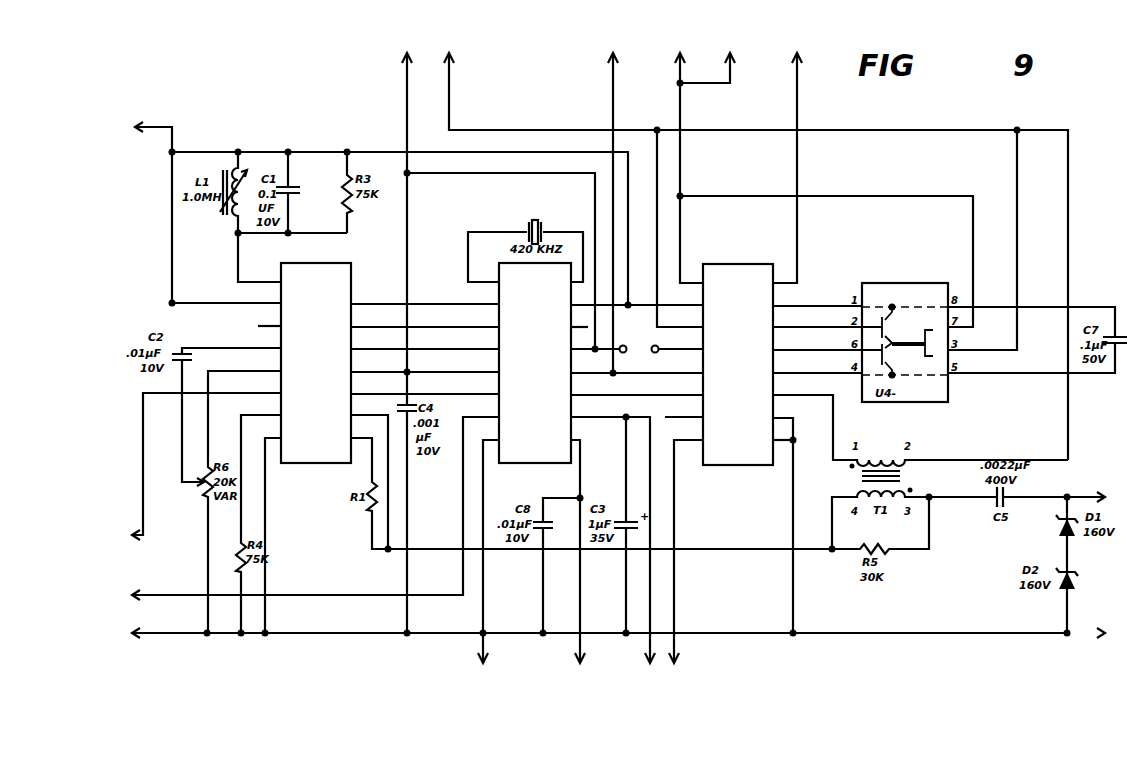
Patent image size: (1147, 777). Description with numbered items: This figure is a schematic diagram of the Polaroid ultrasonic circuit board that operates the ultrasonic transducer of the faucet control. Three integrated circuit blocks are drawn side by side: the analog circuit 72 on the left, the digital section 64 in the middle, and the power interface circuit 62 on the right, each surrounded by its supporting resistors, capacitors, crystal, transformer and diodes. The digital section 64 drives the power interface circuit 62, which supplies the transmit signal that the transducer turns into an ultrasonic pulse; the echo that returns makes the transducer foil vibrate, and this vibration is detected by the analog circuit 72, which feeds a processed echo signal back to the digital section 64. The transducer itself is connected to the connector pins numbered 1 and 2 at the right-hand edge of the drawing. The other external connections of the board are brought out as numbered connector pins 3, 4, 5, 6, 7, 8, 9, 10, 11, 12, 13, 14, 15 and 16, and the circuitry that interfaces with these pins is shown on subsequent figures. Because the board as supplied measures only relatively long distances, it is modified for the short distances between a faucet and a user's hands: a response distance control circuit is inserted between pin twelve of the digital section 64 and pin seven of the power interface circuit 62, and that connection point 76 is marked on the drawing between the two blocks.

The power interface circuit 62 is at (742, 465).
The digital section 64 is at (546, 463).
The analog circuit 72 is at (333, 463).
The connection point 76 is at (642, 351).
The connector pin 1 is at (1103, 616).
The connector pin 2 is at (1098, 479).
The terminal 3 is at (126, 127).
The terminal 4 is at (133, 507).
The terminal 5 is at (482, 679).
The terminal 6 is at (579, 679).
The terminal 7 is at (132, 577).
The terminal 8 is at (448, 42).
The terminal 9 is at (648, 679).
The terminal 10 is at (135, 613).
The terminal 11 is at (675, 679).
The terminal 12 is at (798, 42).
The terminal 13 is at (731, 42).
The terminal 14 is at (681, 42).
The terminal 15 is at (615, 42).
The terminal 16 is at (408, 42).